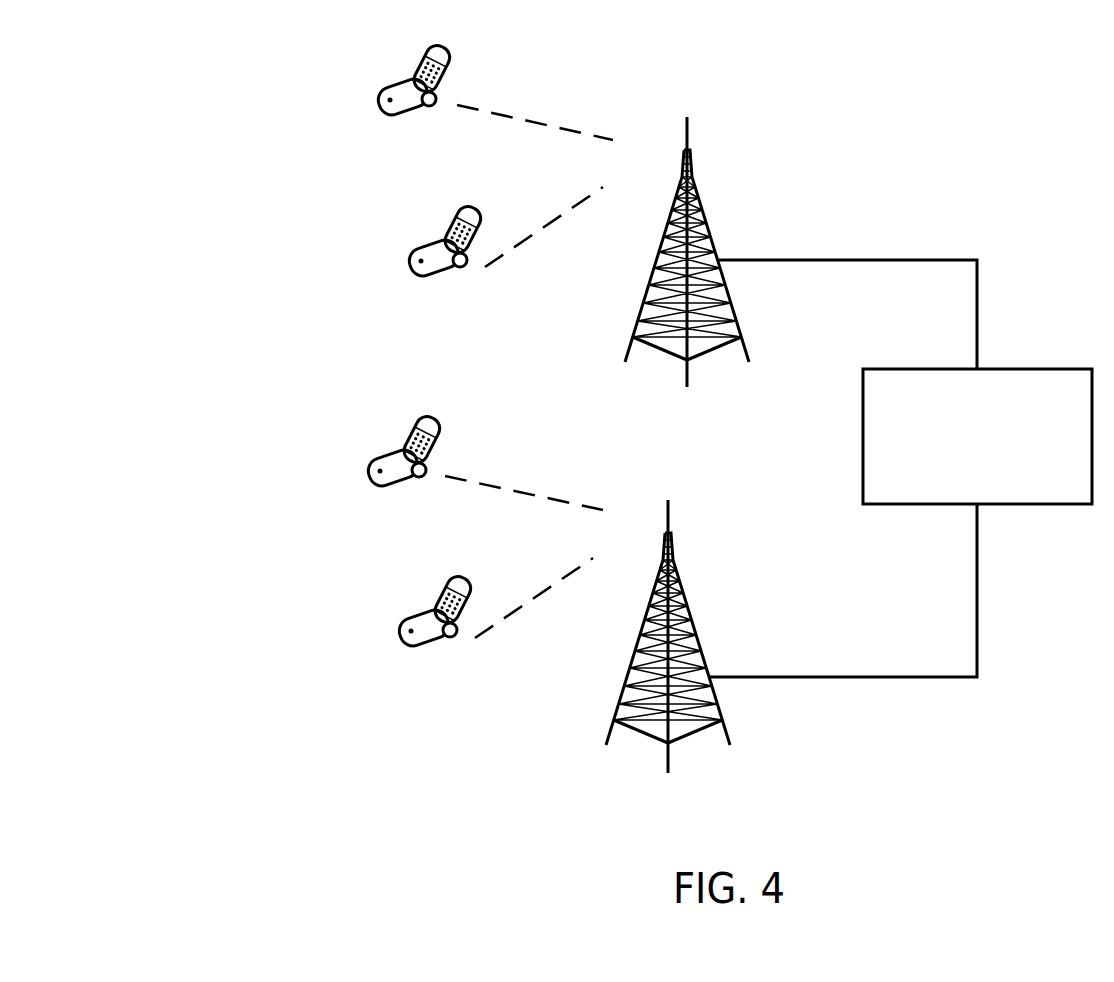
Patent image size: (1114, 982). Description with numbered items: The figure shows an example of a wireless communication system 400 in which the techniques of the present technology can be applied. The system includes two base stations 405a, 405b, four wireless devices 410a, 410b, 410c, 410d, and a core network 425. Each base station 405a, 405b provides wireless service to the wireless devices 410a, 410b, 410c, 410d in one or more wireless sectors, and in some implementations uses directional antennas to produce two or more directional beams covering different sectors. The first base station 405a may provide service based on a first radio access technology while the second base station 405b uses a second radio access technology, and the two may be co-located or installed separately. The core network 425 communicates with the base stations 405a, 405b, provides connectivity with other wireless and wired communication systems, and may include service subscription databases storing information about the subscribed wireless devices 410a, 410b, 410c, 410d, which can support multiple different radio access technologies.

The wireless communication system 400 is at (240, 168).
The base station 405a is at (712, 260).
The base station 405b is at (694, 646).
The wireless device 410a is at (451, 64).
The wireless device 410b is at (468, 217).
The wireless device 410c is at (446, 432).
The wireless device 410d is at (464, 591).
The core network 425 is at (900, 468).